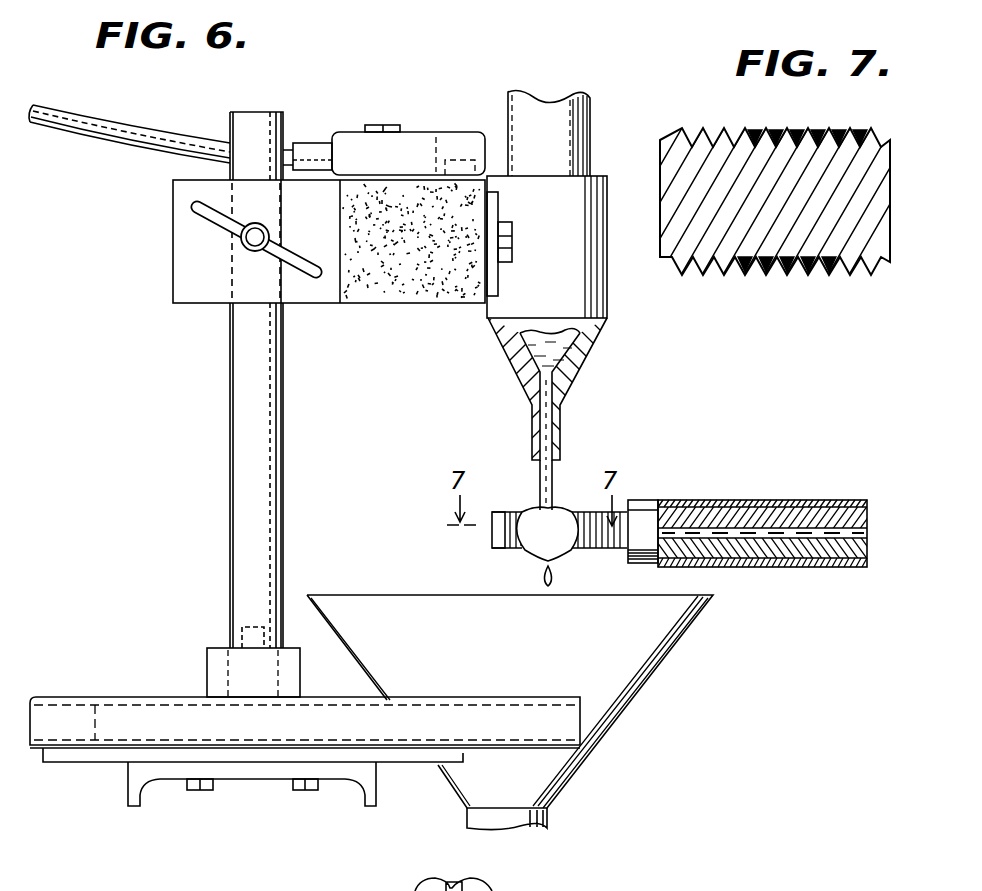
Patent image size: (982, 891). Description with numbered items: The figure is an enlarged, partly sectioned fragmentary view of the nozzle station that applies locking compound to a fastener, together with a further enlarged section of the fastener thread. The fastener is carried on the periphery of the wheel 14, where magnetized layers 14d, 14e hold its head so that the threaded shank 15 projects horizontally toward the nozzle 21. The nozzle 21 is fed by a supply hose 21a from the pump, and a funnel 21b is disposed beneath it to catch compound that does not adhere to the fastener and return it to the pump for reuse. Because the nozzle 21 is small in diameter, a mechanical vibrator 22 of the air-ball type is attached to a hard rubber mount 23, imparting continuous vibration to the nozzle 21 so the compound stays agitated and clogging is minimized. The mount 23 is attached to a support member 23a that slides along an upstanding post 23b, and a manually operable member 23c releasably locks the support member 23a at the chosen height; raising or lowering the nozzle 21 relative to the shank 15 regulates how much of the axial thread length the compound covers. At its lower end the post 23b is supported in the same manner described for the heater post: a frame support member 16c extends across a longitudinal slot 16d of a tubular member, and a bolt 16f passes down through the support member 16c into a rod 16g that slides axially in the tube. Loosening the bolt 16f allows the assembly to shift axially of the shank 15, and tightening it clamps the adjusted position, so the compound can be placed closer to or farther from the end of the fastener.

In FIG. 6, the wheel 14 is at (757, 530).
In FIG. 6, the magnetized layer 14d is at (837, 513).
In FIG. 6, the magnetized layer 14e is at (852, 558).
In FIG. 7, the threaded shank 15 is at (722, 276).
In FIG. 6, the frame support member 16c is at (213, 665).
In FIG. 6, the longitudinal slot 16d is at (410, 710).
In FIG. 6, the bolt 16f is at (242, 627).
In FIG. 6, the rod 16g is at (433, 712).
In FIG. 6, the nozzle 21 is at (561, 420).
In FIG. 6, the supply hose 21a is at (590, 112).
In FIG. 6, the funnel 21b is at (651, 676).
In FIG. 6, the mechanical vibrator 22 is at (416, 138).
In FIG. 6, the hard rubber mount 23 is at (428, 286).
In FIG. 6, the support member 23a is at (178, 295).
In FIG. 6, the upstanding post 23b is at (233, 437).
In FIG. 6, the manually operable member 23c is at (203, 213).